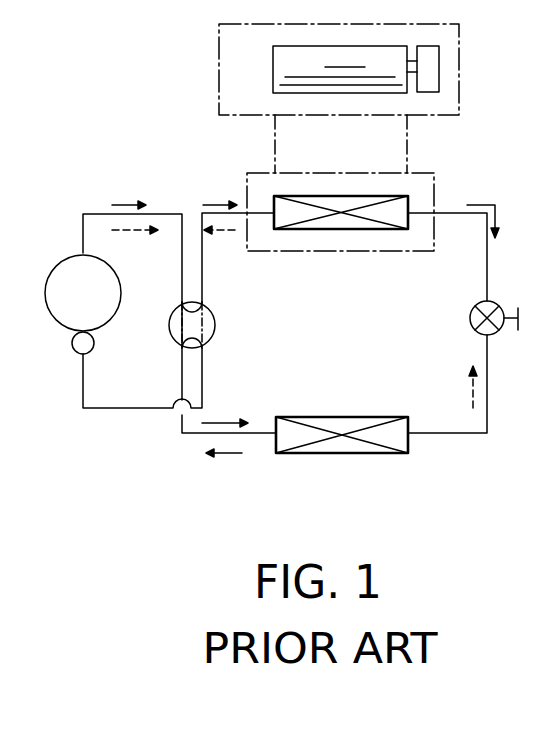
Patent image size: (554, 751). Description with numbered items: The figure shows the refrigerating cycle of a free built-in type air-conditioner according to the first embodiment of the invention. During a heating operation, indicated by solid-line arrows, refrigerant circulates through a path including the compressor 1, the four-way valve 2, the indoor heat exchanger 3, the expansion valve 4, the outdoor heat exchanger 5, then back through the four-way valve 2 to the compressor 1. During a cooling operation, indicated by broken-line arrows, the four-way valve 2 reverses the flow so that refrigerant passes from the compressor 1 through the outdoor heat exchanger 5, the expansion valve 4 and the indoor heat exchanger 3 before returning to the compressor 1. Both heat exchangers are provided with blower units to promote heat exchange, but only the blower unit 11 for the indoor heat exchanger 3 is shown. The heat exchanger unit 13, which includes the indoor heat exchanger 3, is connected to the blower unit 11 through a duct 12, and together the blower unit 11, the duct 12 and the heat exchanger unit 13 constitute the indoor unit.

The compressor 1 is at (55, 321).
The four-way valve 2 is at (205, 325).
The indoor heat exchanger 3 is at (347, 229).
The expansion valve 4 is at (497, 306).
The outdoor heat exchanger 5 is at (393, 453).
The blower unit 11 is at (459, 50).
The duct 12 is at (407, 130).
The heat exchanger unit 13 is at (434, 178).